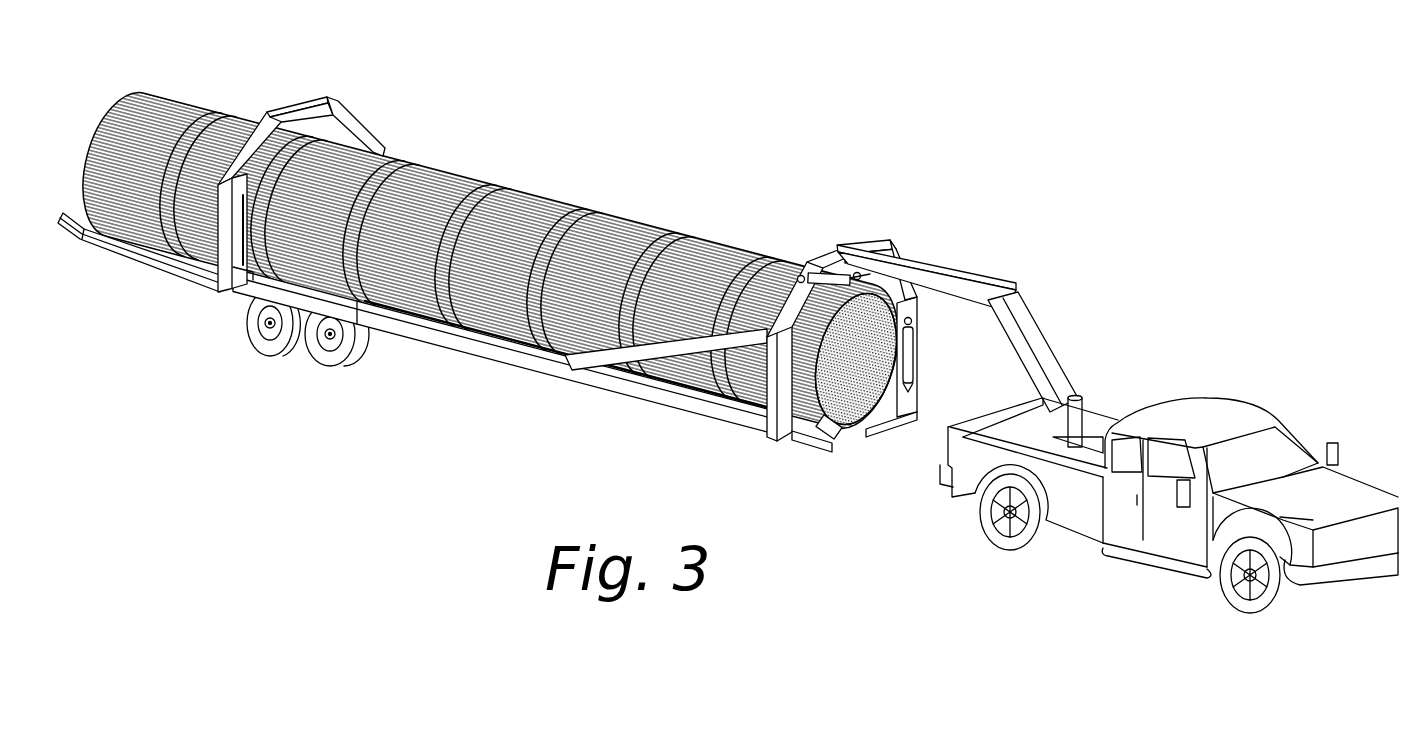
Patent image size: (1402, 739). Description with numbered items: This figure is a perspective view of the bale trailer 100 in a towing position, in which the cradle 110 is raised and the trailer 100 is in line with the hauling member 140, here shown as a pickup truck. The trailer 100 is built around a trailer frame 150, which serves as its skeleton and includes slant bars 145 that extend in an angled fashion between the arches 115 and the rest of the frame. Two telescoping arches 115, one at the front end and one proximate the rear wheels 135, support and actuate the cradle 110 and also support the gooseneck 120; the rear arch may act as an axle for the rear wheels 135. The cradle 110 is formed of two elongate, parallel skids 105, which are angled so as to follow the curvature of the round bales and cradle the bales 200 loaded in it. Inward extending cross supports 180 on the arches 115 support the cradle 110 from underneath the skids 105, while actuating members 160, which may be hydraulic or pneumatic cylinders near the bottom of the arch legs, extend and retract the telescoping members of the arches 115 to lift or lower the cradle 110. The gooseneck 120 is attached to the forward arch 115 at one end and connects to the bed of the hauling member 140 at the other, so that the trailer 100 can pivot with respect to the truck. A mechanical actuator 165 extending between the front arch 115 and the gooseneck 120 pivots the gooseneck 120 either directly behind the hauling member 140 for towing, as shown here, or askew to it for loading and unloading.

The trailer 100 is at (360, 97).
The skids 105 is at (830, 440).
The cradle 110 is at (128, 251).
The arches 115 is at (290, 103).
The gooseneck 120 is at (940, 290).
The rear wheels 135 is at (327, 360).
The hauling member 140 is at (1212, 425).
The slant bars 145 is at (681, 357).
The trailer frame 150 is at (500, 350).
The actuating members 160 is at (908, 350).
The mechanical actuator 165 is at (832, 272).
The cross supports 180 is at (788, 440).
The bale 200 is at (474, 266).